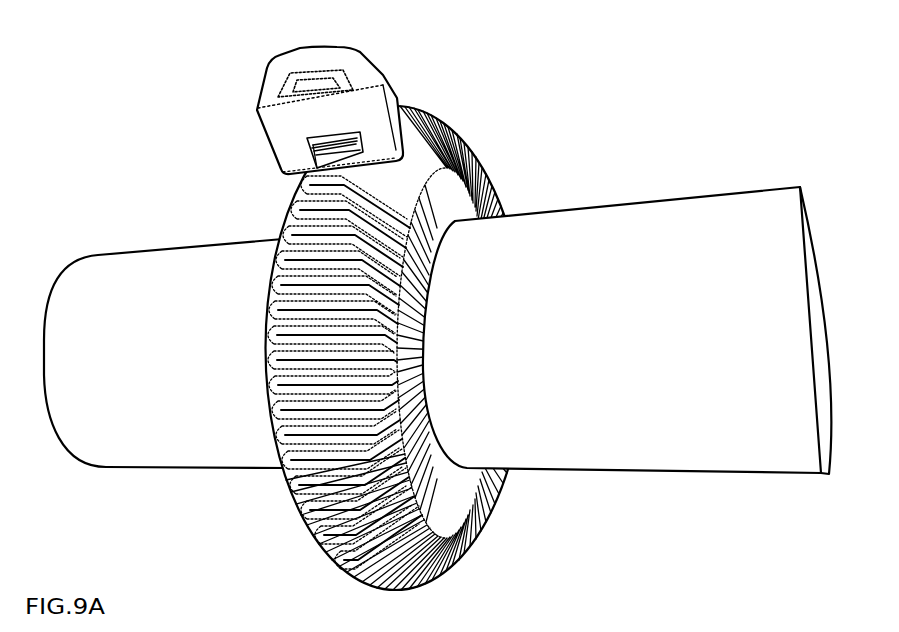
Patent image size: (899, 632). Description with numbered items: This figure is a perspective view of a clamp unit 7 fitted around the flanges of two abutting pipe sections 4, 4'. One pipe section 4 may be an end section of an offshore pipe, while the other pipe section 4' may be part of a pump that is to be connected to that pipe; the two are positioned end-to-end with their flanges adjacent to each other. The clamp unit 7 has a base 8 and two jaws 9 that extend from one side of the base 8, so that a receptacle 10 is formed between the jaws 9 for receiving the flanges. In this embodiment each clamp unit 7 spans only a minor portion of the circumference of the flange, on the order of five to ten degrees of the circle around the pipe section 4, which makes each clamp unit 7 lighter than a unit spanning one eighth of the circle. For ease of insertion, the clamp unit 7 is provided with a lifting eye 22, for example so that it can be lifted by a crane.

The pipe section 4 is at (165, 353).
The pipe section 4' is at (627, 330).
The clamp unit 7 is at (333, 96).
The base 8 is at (290, 123).
The jaws 9 is at (290, 157).
The receptacle 10 is at (350, 150).
The lifting eye 22 is at (313, 76).